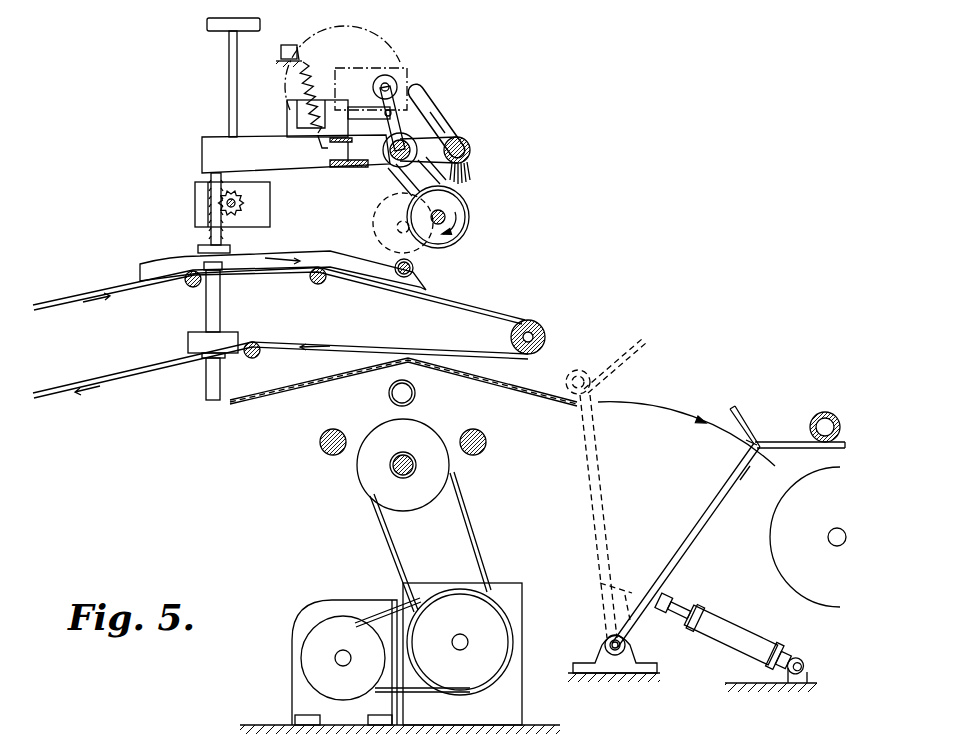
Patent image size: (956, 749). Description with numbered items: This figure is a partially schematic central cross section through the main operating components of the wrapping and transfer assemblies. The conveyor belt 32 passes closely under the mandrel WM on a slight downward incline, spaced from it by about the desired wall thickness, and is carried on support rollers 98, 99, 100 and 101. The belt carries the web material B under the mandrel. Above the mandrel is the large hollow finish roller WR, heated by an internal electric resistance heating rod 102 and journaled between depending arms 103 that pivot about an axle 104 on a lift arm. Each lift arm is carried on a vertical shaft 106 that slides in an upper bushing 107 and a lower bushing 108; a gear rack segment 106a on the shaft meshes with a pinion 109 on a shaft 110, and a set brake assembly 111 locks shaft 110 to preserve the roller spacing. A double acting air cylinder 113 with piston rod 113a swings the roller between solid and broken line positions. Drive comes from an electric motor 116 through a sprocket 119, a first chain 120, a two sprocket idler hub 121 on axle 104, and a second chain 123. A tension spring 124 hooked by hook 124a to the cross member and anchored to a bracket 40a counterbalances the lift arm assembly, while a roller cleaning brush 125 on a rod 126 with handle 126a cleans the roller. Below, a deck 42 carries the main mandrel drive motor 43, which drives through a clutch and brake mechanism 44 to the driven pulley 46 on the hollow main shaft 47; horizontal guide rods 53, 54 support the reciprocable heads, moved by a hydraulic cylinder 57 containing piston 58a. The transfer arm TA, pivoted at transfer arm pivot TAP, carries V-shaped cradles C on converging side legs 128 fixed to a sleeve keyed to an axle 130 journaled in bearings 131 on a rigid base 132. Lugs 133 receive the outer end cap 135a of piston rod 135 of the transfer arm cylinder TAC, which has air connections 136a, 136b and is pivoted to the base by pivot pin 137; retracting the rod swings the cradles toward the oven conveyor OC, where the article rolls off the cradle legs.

The bracket 40a is at (288, 44).
The double acting air cylinder 113 is at (345, 68).
The electric motor 116 is at (396, 46).
The sprocket 119 is at (390, 78).
The piston rod 113a is at (373, 87).
The first chain 120 is at (427, 86).
The tension spring 124 is at (288, 120).
The handle 126a is at (442, 120).
The two sprocket idler hub 121 is at (462, 141).
The rod 126 is at (471, 153).
The hook 124a is at (330, 146).
The second chain 123 is at (466, 171).
The roller cleaning brush 125 is at (468, 182).
The set brake assembly 111 is at (268, 183).
The axle 104 is at (393, 165).
The pinion 109 is at (270, 196).
The arm 103 is at (396, 190).
The shaft 110 is at (245, 204).
The electric resistance heating rod 102 is at (468, 222).
The gear rack segment 106a is at (224, 240).
The conveyor belt 32 is at (126, 287).
The upper bushing 107 is at (226, 274).
The support roller 101 is at (186, 285).
The vertical shaft 106 is at (222, 309).
The support roller 99 is at (325, 283).
The lower bushing 108 is at (188, 340).
The support roller 100 is at (260, 346).
The support roller 98 is at (511, 337).
The piston 58a is at (389, 392).
The double acting hydraulic cylinder 57 is at (416, 393).
The horizontal guide rod 54 is at (339, 454).
The hollow main shaft 47 is at (411, 455).
The horizontal guide rod 53 is at (485, 453).
The driven pulley 46 is at (426, 500).
The clutch and brake mechanism 44 is at (500, 583).
The main mandrel drive motor 43 is at (353, 614).
The deck 42 is at (276, 722).
The converging side leg 128 is at (706, 514).
The lug 133 is at (660, 582).
The outer end cap 135a is at (694, 593).
The air connection 136a is at (729, 613).
The air connection 136b is at (804, 642).
The pivot pin 137 is at (817, 654).
The bearing 131 is at (598, 658).
The piston rod 135 is at (663, 625).
The axle 130 is at (616, 656).
The rigid base 132 is at (738, 684).
The finish roller WR is at (474, 214).
The mandrel WM is at (414, 266).
The web B is at (318, 254).
The cradle C is at (748, 439).
The oven conveyor OC is at (792, 477).
The transfer arm TA is at (714, 510).
The transfer arm cylinder TAC is at (741, 624).
The transfer arm pivot TAP is at (635, 648).